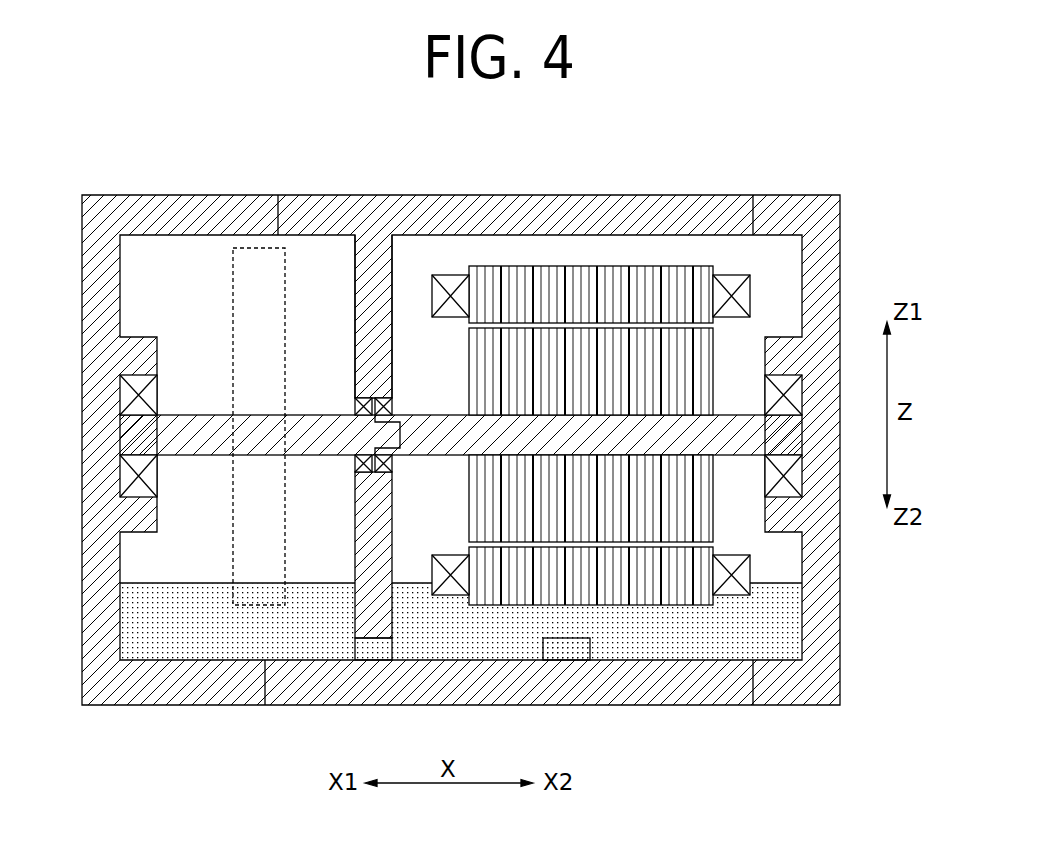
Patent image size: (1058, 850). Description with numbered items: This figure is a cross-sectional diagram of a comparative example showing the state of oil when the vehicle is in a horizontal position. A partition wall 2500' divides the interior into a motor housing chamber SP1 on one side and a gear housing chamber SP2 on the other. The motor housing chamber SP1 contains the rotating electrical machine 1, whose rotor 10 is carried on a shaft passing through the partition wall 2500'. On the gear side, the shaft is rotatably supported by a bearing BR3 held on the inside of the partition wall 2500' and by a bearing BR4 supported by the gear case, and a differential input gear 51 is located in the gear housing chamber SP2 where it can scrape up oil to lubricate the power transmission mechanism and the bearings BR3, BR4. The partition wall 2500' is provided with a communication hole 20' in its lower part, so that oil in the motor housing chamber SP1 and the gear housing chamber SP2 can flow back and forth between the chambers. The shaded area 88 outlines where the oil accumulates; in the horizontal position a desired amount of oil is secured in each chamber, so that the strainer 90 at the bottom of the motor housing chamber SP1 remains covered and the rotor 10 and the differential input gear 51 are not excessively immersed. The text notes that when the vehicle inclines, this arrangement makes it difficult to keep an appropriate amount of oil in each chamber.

The rotating electrical machine 1 is at (687, 250).
The partition wall 2500' is at (423, 316).
The communication hole 20' is at (350, 566).
The shaded area 88 is at (785, 625).
The strainer 90 is at (592, 645).
The rotor 10 is at (729, 380).
The bearing BR4 is at (153, 395).
The bearing BR3 is at (357, 407).
The differential input gear 51 is at (285, 300).
The gear housing chamber SP2 is at (205, 292).
The motor housing chamber SP1 is at (655, 259).